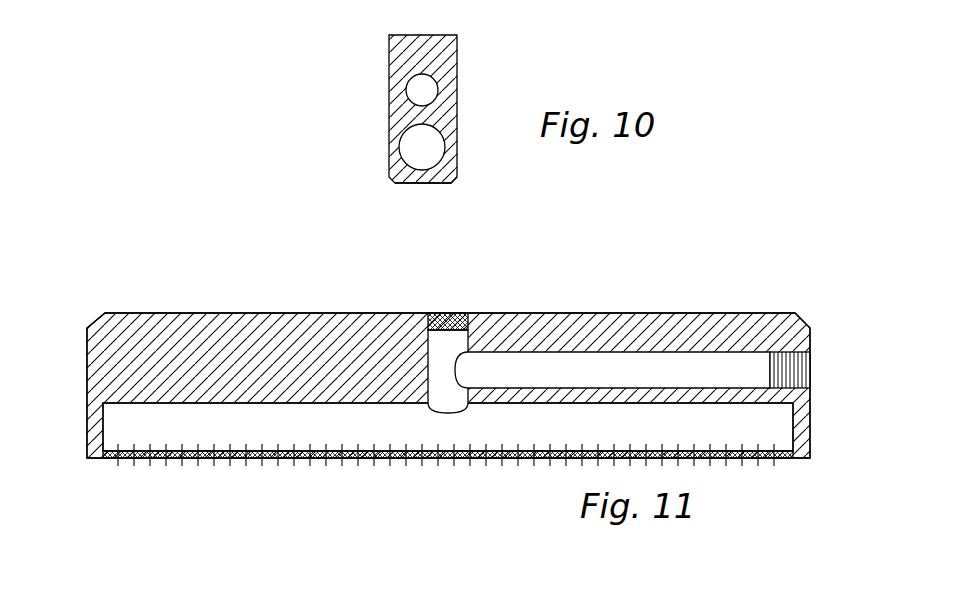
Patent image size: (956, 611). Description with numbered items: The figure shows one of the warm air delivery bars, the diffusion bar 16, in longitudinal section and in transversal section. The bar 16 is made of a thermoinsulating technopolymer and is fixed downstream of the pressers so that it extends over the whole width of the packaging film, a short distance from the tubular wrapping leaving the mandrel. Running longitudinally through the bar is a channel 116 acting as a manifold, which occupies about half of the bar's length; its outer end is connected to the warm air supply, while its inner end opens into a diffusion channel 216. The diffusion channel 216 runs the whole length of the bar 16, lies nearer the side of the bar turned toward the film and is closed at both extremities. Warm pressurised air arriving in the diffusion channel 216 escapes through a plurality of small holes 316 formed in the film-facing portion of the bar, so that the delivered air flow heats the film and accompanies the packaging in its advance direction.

In FIG. 10, the diffusion bar 16 is at (388, 65).
In FIG. 11, the diffusion bar 16 is at (193, 310).
In FIG. 10, the channel 116 is at (430, 92).
In FIG. 11, the channel 116 is at (602, 365).
In FIG. 10, the diffusion channel 216 is at (435, 147).
In FIG. 11, the diffusion channel 216 is at (108, 427).
In FIG. 10, the small holes 316 is at (441, 172).
In FIG. 11, the small holes 316 is at (282, 455).